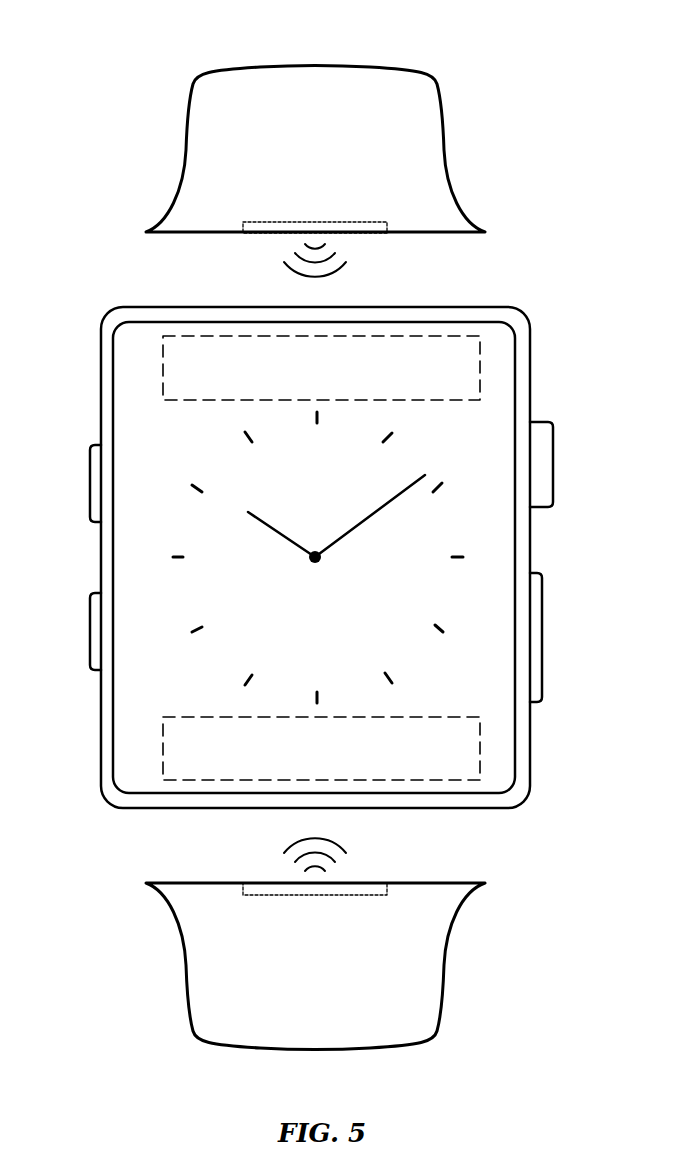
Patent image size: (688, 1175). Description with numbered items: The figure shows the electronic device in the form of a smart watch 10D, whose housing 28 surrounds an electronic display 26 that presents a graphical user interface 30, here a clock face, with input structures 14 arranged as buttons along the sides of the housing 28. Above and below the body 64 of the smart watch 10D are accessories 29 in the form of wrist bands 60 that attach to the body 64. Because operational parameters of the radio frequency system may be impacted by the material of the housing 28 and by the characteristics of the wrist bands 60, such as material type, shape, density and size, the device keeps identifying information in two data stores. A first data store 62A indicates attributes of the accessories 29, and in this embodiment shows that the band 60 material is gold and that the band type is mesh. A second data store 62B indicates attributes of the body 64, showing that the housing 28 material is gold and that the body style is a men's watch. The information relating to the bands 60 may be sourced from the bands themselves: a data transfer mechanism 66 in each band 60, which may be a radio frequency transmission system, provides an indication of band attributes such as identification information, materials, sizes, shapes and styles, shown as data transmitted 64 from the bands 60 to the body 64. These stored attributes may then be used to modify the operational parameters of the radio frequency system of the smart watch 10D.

The smart watch 10D is at (102, 56).
The input structures 14 is at (90, 485).
The electronic display 26 is at (137, 406).
The housing 28 is at (100, 560).
The accessories 29 is at (310, 64).
The graphical user interface 30 is at (137, 682).
The wrist band 60 is at (315, 558).
The first data store 62A is at (480, 370).
The second data store 62B is at (480, 748).
The body of the smart watch 64 is at (344, 270).
The data transfer mechanism 66 is at (316, 222).